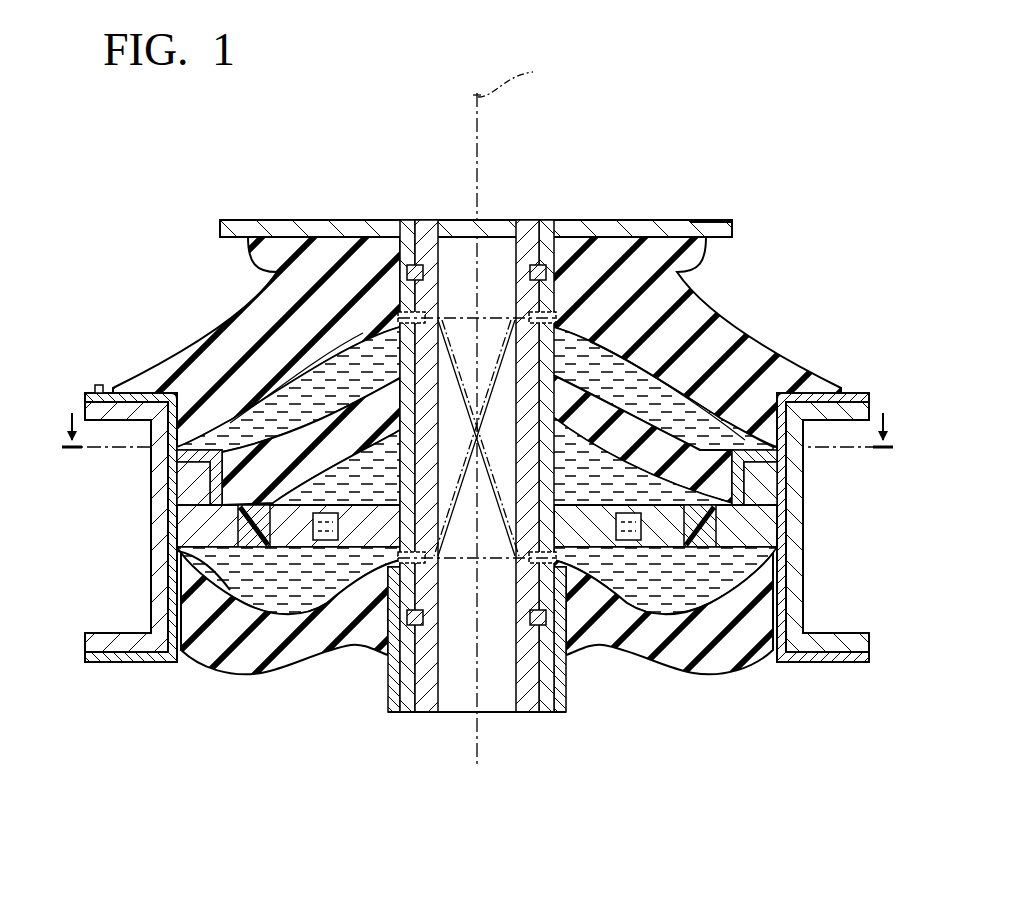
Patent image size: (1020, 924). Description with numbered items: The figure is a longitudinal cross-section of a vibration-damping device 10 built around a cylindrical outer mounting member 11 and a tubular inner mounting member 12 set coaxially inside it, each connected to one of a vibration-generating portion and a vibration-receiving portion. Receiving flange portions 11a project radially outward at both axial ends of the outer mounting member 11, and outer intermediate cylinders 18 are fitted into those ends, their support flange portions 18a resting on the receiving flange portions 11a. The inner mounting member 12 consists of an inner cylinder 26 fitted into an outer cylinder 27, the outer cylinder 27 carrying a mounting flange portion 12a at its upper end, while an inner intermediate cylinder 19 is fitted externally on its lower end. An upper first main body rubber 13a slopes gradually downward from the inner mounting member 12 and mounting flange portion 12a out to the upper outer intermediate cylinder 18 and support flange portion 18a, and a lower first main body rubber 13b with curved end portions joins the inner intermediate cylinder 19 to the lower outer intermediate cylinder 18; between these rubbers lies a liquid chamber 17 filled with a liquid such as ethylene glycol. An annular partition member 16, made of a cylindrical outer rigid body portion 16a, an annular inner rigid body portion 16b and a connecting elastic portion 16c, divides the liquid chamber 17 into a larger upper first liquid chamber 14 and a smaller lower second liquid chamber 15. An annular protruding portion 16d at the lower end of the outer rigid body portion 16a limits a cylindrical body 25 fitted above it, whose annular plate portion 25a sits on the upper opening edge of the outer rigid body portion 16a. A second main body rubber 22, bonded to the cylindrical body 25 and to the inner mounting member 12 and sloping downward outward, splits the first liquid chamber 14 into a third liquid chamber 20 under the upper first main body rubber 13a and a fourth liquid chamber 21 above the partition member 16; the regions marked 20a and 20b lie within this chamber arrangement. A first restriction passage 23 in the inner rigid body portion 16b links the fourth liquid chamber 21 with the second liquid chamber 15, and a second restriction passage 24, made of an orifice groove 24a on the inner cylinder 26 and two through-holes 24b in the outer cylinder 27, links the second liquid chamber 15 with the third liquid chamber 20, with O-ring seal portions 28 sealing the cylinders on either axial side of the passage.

The vibration-damping device 10 is at (728, 103).
The outer mounting member 11 is at (494, 519).
The receiving flange portion 11a is at (837, 407).
The inner mounting member 12 is at (476, 413).
The mounting flange portion 12a is at (695, 221).
The upper first main body rubber 13a is at (735, 360).
The lower first main body rubber 13b is at (694, 674).
The first liquid chamber 14 is at (722, 409).
The second liquid chamber 15 is at (722, 558).
The partition member 16 is at (443, 630).
The outer rigid body portion 16a is at (187, 520).
The inner rigid body portion 16b is at (250, 587).
The connecting elastic portion 16c is at (182, 554).
The annular protruding portion 16d is at (720, 503).
The liquid chamber 17 is at (247, 602).
The outer intermediate cylinder 18 is at (803, 392).
The support flange portion 18a is at (100, 385).
The inner intermediate cylinder 19 is at (393, 680).
The third liquid chamber 20 is at (343, 333).
The first liquid chamber 20a is at (220, 406).
The second liquid chamber 20b is at (683, 372).
The fourth liquid chamber 21 is at (362, 492).
The second main body rubber 22 is at (323, 397).
The first restriction passage 23 is at (325, 540).
The second restriction passage 24 is at (546, 311).
The orifice groove 24a is at (422, 312).
The through-hole 24b is at (407, 312).
The cylindrical body 25 is at (205, 486).
The annular plate portion 25a is at (185, 463).
The inner cylinder 26 is at (481, 437).
The outer cylinder 27 is at (560, 250).
The seal portion 28 is at (415, 265).